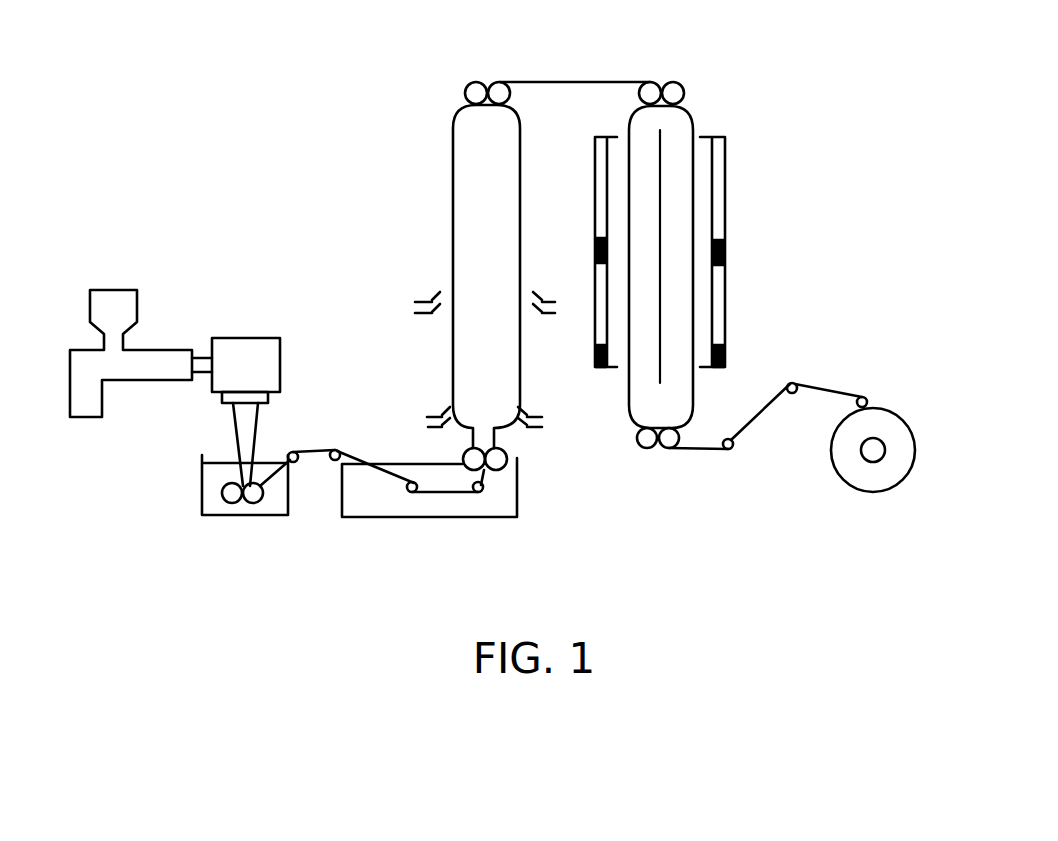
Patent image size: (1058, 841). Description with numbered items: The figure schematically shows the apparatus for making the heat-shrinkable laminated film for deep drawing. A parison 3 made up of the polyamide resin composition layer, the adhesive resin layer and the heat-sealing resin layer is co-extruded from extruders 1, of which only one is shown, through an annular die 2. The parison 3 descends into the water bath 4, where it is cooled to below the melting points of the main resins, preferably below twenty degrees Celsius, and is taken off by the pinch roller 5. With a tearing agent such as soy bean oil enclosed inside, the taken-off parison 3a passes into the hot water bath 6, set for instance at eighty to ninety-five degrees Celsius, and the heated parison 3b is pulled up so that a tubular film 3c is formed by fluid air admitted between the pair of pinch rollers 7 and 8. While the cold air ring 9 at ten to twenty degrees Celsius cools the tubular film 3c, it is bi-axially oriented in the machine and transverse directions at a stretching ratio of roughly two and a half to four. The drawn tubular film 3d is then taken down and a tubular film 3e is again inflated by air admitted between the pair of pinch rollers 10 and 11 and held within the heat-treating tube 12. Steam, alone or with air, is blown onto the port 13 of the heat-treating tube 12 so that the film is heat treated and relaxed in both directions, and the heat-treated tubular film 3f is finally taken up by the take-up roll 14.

The extruder 1 is at (130, 289).
The annular die 2 is at (227, 337).
The parison 3 is at (257, 433).
The film segment after quenching 3a is at (322, 449).
The heated parison 3b is at (488, 480).
The tubular film 3c is at (519, 377).
The drawn tubular film 3d is at (583, 82).
The tubular film 3e is at (692, 394).
The heat-treated tubular film 3f is at (757, 425).
The water bath 4 is at (243, 508).
The pinch roller 5 is at (232, 497).
The hot water bath 6 is at (455, 508).
The pinch roller 7 is at (507, 452).
The pinch roller 8 is at (468, 83).
The cold air ring 9 is at (437, 297).
The pinch roller 10 is at (683, 88).
The pinch roller 11 is at (640, 453).
The heat-treating tube 12 is at (720, 167).
The port 13 is at (727, 252).
The take-up roll 14 is at (868, 487).